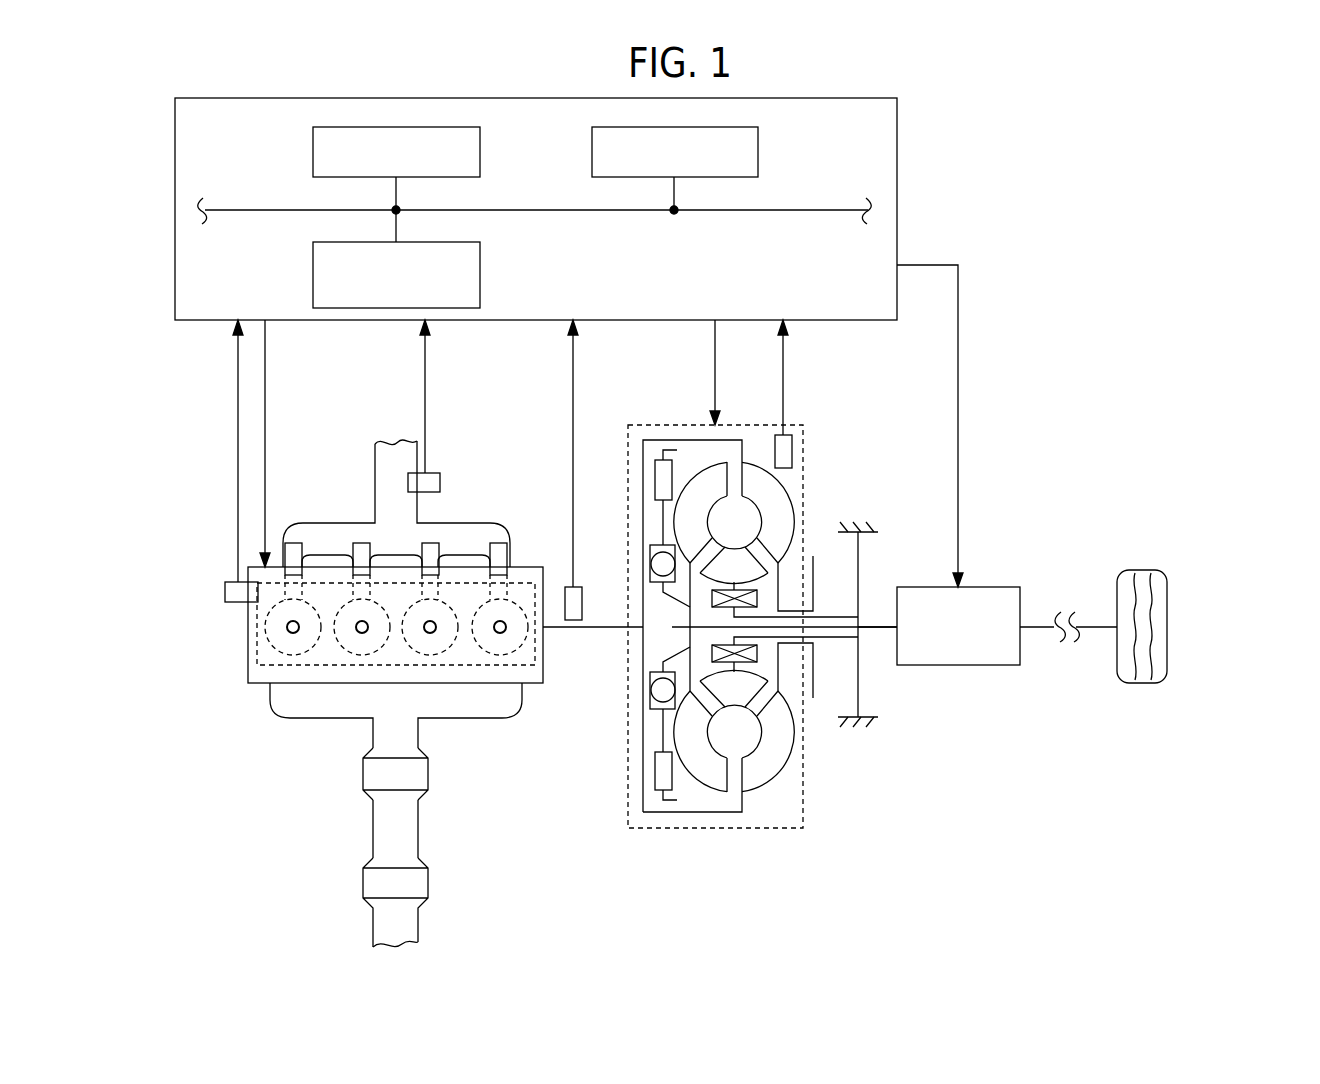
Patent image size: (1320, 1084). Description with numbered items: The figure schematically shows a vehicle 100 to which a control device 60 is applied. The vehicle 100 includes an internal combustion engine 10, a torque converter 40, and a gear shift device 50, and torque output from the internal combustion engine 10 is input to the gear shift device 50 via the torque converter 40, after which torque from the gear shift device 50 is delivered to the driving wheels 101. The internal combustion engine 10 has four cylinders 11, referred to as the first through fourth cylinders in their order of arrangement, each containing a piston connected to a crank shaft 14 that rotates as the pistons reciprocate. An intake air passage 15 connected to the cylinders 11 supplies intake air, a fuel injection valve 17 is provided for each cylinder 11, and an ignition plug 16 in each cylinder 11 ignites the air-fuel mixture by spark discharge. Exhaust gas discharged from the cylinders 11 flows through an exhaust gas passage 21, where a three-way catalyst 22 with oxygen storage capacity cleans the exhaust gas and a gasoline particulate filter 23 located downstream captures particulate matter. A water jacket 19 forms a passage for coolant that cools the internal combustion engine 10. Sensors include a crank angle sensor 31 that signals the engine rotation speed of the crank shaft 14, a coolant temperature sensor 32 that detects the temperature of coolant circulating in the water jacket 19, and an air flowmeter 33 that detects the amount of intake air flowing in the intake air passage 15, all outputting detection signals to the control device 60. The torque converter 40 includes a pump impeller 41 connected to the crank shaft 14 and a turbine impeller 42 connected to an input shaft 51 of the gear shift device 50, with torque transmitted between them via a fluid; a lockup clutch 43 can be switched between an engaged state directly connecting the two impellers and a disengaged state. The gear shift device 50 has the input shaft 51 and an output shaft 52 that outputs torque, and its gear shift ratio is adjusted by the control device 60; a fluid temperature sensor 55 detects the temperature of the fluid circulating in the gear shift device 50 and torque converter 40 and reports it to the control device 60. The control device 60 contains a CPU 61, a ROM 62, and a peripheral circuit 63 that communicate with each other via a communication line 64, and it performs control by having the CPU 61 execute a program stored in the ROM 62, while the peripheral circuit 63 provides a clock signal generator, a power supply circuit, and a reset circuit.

The internal combustion engine 10 is at (535, 752).
The cylinder 11 is at (498, 690).
The crank shaft 14 is at (595, 630).
The intake air passage 15 is at (375, 462).
The ignition plug 16 is at (299, 627).
The fuel injection valve 17 is at (361, 543).
The water jacket 19 is at (257, 655).
The exhaust gas passage 21 is at (373, 826).
The three-way catalyst 22 is at (363, 773).
The gasoline particulate filter 23 is at (363, 884).
The crank angle sensor 31 is at (582, 600).
The coolant temperature sensor 32 is at (225, 591).
The air flowmeter 33 is at (440, 483).
The torque converter 40 is at (733, 655).
The pump impeller 41 is at (777, 773).
The turbine impeller 42 is at (660, 724).
The lockup clutch 43 is at (655, 474).
The gear shift device 50 is at (933, 585).
The input shaft 51 is at (878, 622).
The output shaft 52 is at (1043, 622).
The fluid temperature sensor 55 is at (792, 450).
The control device 60 is at (858, 98).
The CPU 61 is at (482, 150).
The ROM 62 is at (760, 150).
The peripheral circuit 63 is at (482, 266).
The communication line 64 is at (807, 213).
The vehicle 100 is at (975, 757).
The driving wheel 101 is at (1167, 627).